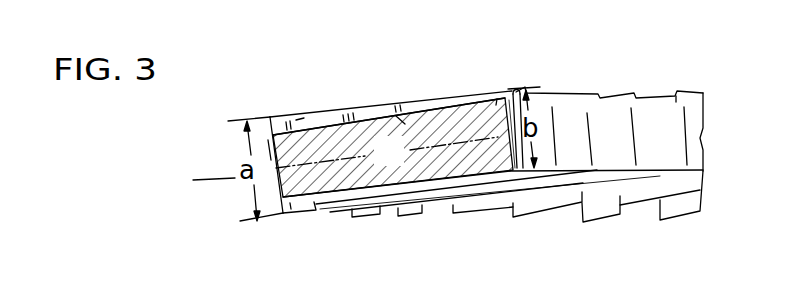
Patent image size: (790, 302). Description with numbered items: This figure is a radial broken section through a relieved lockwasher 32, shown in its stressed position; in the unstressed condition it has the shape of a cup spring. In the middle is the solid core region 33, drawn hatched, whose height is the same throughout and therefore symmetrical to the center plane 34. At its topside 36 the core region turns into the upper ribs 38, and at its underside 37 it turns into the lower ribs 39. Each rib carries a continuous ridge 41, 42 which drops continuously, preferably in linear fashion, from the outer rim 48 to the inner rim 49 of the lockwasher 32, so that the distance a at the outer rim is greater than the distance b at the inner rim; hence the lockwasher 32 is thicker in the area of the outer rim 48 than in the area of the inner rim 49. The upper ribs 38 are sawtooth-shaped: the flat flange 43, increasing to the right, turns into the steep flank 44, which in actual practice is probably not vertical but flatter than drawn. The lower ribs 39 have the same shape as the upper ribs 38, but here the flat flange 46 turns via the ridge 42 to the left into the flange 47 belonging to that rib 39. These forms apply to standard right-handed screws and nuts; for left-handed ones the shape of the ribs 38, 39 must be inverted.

The lockwasher 32 is at (452, 82).
The core region 33 is at (402, 162).
The center plane 34 is at (218, 181).
The topside of the core region 36 is at (417, 103).
The underside of the core region 37 is at (420, 203).
The upper ribs 38 is at (308, 110).
The lower ribs 39 is at (308, 202).
The ridge of the upper ribs 41 is at (355, 107).
The ridge of the lower ribs 42 is at (377, 207).
The flat flange 43 is at (650, 93).
The steep flank 44 is at (680, 95).
The flat flange of the lower rib 46 is at (617, 203).
The flange of the lower rib 47 is at (593, 170).
The outer rim 48 is at (269, 147).
The inner rim 49 is at (513, 90).